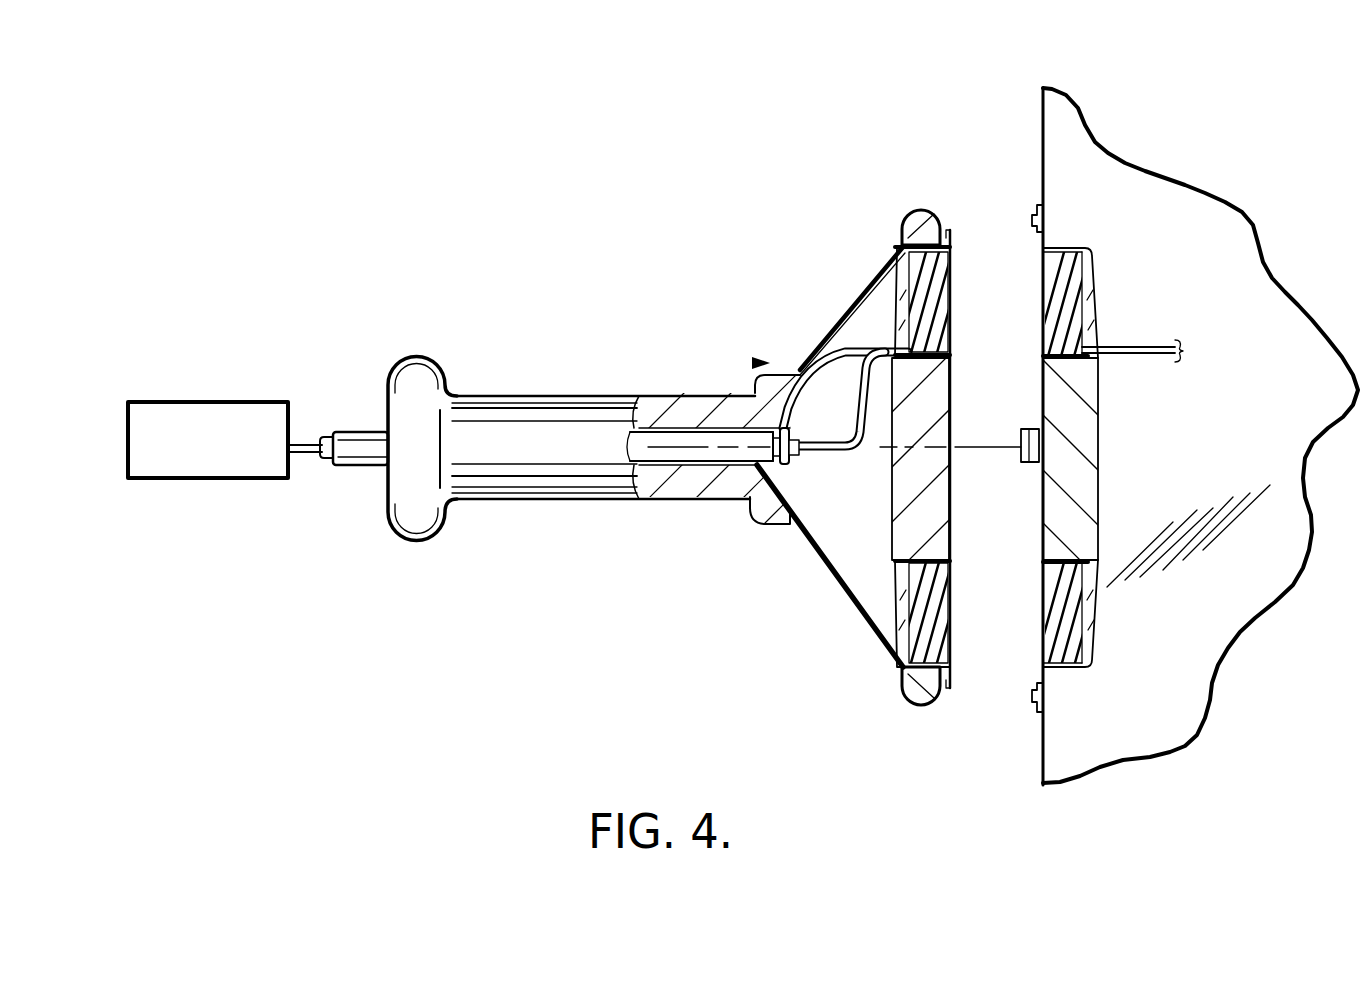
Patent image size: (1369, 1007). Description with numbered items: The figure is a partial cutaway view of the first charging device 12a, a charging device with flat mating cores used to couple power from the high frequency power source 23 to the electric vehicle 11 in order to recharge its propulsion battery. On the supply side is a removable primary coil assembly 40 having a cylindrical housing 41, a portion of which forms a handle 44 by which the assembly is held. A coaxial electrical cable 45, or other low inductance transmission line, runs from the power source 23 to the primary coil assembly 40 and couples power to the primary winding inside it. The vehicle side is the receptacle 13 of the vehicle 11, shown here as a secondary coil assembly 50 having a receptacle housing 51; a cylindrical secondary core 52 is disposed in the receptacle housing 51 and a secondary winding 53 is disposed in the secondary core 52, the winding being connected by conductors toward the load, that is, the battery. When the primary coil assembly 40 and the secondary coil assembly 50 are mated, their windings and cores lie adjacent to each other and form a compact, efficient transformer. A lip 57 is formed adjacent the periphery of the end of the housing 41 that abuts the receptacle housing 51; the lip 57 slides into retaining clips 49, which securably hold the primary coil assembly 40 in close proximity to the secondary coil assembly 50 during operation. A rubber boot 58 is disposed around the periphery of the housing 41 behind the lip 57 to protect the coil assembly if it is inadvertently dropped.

The electric vehicle 11 is at (986, 68).
The first charging device 12a is at (853, 408).
The receptacle 13 is at (990, 798).
The high frequency power source 23 is at (288, 400).
The removable primary coil assembly 40 is at (722, 337).
The cylindrical housing 41 is at (771, 368).
The handle 44 is at (522, 405).
The coaxial electrical cable 45 is at (367, 432).
The retaining clips 49 is at (1026, 476).
The secondary coil assembly 50 is at (1005, 167).
The receptacle housing 51 is at (1187, 213).
The cylindrical secondary core 52 is at (1088, 490).
The secondary winding 53 is at (1052, 610).
The lip 57 is at (950, 230).
The rubber boot 58 is at (905, 213).